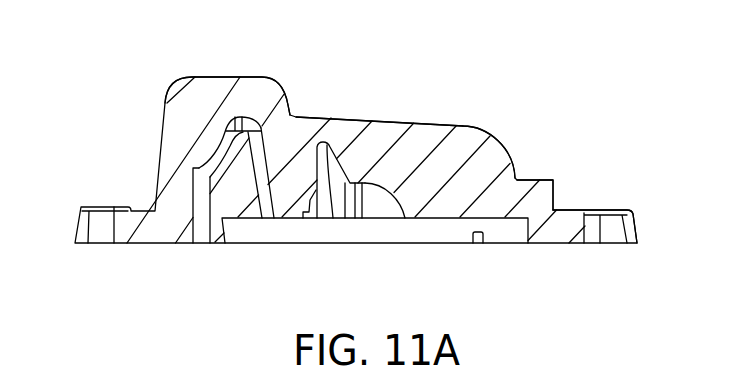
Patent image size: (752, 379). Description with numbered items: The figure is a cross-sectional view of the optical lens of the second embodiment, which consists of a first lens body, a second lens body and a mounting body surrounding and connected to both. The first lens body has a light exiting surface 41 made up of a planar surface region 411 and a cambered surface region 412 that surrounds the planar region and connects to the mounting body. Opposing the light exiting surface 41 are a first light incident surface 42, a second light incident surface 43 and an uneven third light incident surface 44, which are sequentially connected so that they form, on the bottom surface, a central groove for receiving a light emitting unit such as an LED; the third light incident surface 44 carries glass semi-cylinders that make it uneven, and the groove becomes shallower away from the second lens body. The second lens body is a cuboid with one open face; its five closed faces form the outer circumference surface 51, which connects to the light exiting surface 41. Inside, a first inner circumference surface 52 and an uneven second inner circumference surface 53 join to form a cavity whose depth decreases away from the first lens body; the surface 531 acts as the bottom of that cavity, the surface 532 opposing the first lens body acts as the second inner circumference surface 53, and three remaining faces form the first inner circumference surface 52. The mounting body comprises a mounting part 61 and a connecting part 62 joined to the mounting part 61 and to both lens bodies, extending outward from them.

The light exiting surface 41 is at (517, 64).
The planar surface region 411 is at (412, 123).
The cambered surface region 412 is at (498, 140).
The first light incident surface 42 is at (383, 192).
The second light incident surface 43 is at (335, 218).
The third light incident surface 44 is at (317, 218).
The outer circumference surface 51 is at (230, 77).
The first inner circumference surface 52 is at (256, 186).
The second inner circumference surface 53 is at (147, 137).
The bottom surface of cavity 531 is at (232, 127).
The surface opposing first lens body 532 is at (206, 171).
The mounting part 61 is at (630, 213).
The connecting part 62 is at (553, 180).